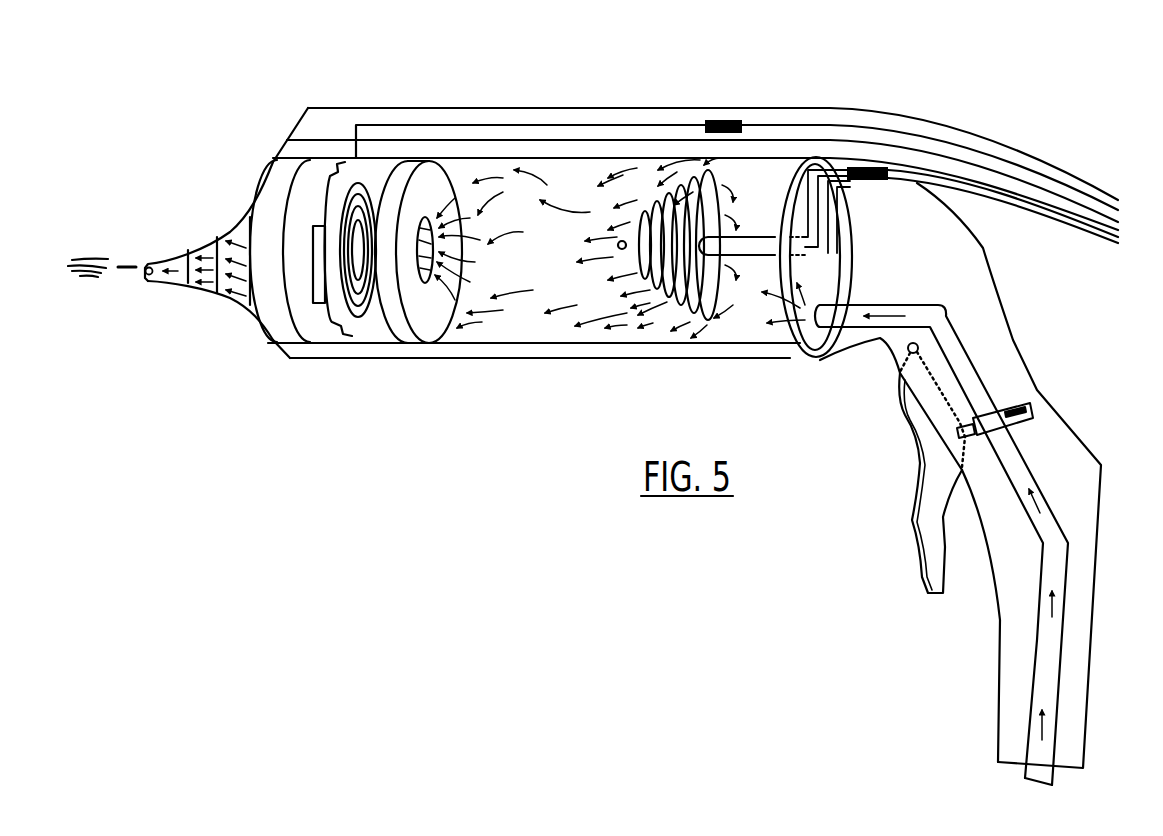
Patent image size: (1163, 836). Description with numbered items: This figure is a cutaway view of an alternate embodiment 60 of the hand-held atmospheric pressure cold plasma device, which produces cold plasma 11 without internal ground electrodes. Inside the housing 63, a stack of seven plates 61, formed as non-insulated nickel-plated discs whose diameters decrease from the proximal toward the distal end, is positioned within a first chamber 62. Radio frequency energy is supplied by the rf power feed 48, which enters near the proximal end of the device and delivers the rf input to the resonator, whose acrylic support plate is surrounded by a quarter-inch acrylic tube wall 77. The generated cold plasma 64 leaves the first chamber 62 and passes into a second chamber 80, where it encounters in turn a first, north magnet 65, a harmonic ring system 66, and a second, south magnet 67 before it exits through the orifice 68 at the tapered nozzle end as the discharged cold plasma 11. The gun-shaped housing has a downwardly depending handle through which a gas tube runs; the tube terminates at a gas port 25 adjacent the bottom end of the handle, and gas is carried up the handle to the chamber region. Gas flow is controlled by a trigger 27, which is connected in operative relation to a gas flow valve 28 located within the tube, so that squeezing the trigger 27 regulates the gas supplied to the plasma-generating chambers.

The alternate embodiment 60 is at (675, 79).
The housing 63 is at (386, 118).
The acrylic tube wall 77 is at (510, 150).
The rf power feed 48 is at (750, 236).
The second chamber 80 is at (398, 369).
The orifice 68 is at (143, 263).
The cold plasma 11 is at (93, 258).
The second, south magnet 67 is at (327, 323).
The harmonic ring system 66 is at (362, 317).
The first, north magnet 65 is at (433, 230).
The generated cold plasma 64 is at (598, 248).
The plates 61 is at (707, 285).
The first chamber 62 is at (778, 196).
The gas port 25 is at (1042, 700).
The trigger 27 is at (932, 548).
The gas flow valve 28 is at (985, 429).